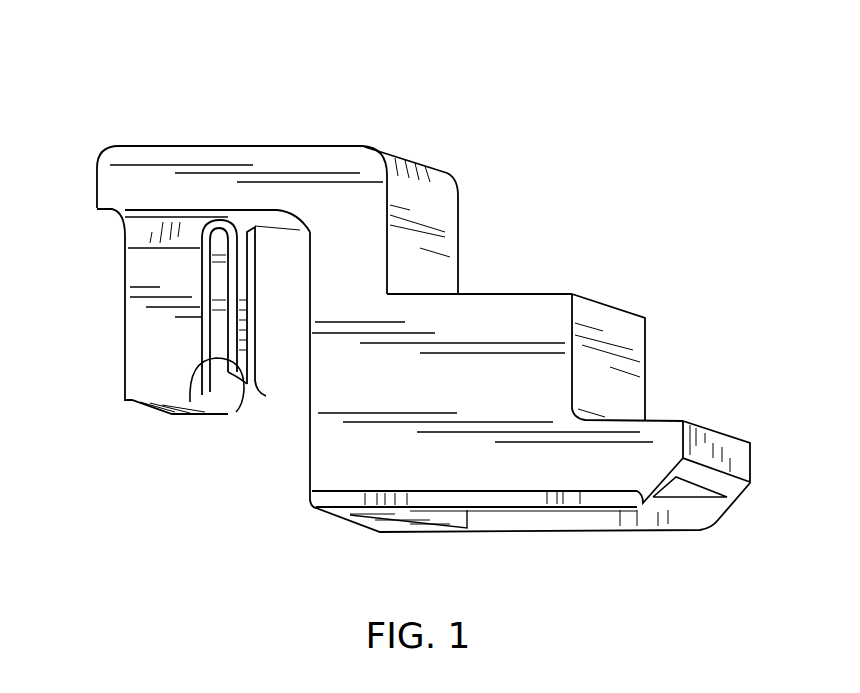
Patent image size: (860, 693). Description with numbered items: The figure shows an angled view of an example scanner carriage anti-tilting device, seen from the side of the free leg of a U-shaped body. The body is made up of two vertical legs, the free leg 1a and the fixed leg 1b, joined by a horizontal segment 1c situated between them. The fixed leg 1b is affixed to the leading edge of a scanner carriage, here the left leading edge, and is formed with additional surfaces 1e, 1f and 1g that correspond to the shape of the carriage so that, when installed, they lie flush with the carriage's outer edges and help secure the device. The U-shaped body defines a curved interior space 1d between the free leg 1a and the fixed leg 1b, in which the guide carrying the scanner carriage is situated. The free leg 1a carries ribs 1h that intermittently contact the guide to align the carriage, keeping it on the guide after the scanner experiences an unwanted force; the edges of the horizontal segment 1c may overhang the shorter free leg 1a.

The free leg 1a is at (125, 305).
The fixed leg 1b is at (368, 235).
The horizontal segment 1c is at (215, 124).
The interior space 1d is at (285, 364).
The additional surface 1e is at (447, 249).
The additional surface 1f is at (627, 367).
The additional surface 1g is at (737, 458).
The ribs 1h is at (192, 398).